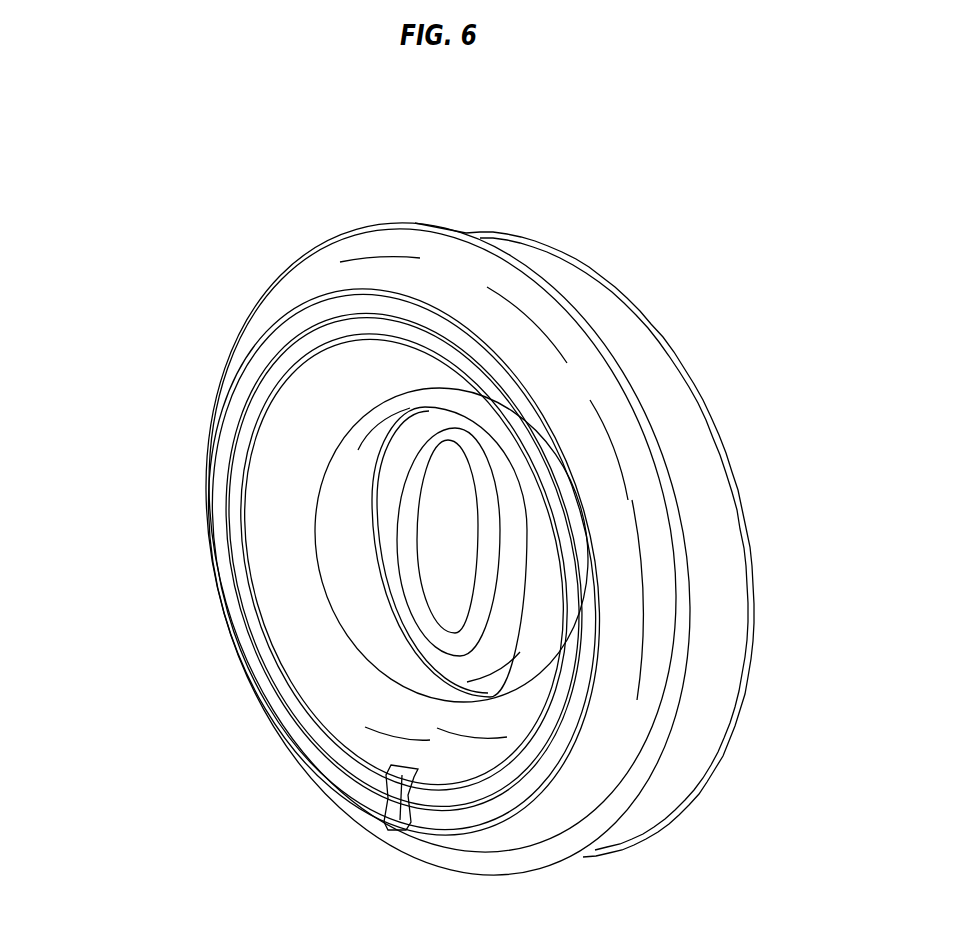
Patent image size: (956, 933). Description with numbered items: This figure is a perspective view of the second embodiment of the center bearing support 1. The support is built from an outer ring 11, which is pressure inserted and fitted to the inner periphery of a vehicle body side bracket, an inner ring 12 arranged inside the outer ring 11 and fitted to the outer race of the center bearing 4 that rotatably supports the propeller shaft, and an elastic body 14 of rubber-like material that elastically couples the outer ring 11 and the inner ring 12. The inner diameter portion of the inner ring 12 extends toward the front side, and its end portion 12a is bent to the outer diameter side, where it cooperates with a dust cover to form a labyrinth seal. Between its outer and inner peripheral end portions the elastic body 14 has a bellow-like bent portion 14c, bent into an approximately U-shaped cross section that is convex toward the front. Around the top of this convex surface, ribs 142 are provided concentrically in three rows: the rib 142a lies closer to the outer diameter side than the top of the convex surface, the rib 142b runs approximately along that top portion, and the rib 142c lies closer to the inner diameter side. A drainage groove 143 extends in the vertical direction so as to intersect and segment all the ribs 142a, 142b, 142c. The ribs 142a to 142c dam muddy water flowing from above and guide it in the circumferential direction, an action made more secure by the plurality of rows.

The center bearing support 1 is at (669, 292).
The center bearing 4 is at (383, 538).
The outer ring 11 is at (536, 243).
The inner ring 12 is at (392, 553).
The end portion 12a is at (347, 619).
The elastic body 14 is at (632, 581).
The bellow-like bent portion 14c is at (352, 274).
The ribs 142 is at (112, 255).
The rib 142a is at (288, 314).
The rib 142b is at (266, 363).
The rib 142c is at (248, 412).
The drainage groove 143 is at (393, 828).